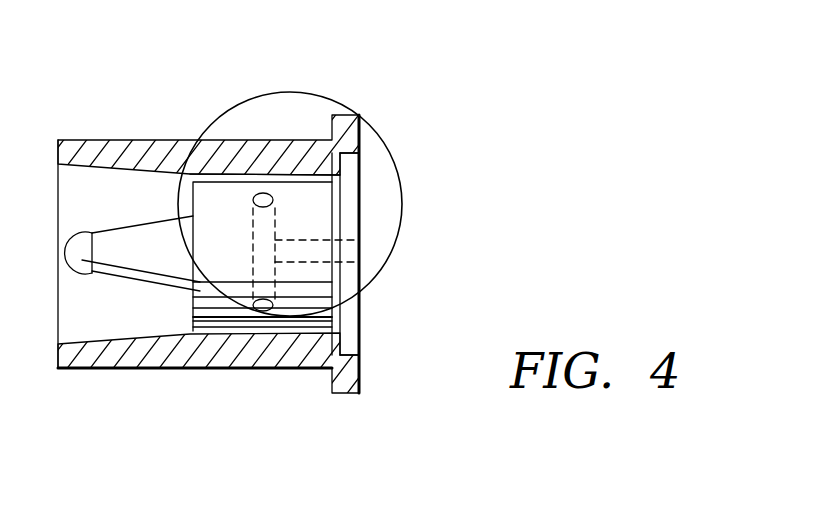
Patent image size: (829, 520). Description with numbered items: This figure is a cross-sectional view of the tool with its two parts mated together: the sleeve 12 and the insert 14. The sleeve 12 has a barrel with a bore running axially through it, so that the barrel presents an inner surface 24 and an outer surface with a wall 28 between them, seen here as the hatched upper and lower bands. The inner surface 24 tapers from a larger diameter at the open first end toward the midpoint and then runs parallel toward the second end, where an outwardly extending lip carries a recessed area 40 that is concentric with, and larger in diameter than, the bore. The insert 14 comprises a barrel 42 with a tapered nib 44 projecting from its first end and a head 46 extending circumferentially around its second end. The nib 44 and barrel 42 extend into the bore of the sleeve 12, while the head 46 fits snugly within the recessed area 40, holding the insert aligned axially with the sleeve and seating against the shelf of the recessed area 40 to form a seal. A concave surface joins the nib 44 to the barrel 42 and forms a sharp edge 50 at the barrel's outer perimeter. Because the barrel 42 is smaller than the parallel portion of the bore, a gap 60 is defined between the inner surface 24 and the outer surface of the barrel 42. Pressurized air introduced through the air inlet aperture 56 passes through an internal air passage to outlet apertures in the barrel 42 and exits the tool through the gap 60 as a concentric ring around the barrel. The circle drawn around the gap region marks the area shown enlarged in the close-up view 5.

The sleeve 12 is at (94, 140).
The inner surface 24 is at (183, 176).
The wall 28 is at (270, 155).
The gap 60 is at (305, 176).
The detail circle (FIG. 5) 5 is at (387, 147).
The recessed area 40 is at (343, 155).
The head 46 is at (350, 213).
The air inlet aperture 56 is at (355, 252).
The nib 44 is at (115, 255).
The sharp edge 50 is at (190, 331).
The insert 14 is at (213, 316).
The barrel 42 is at (237, 316).